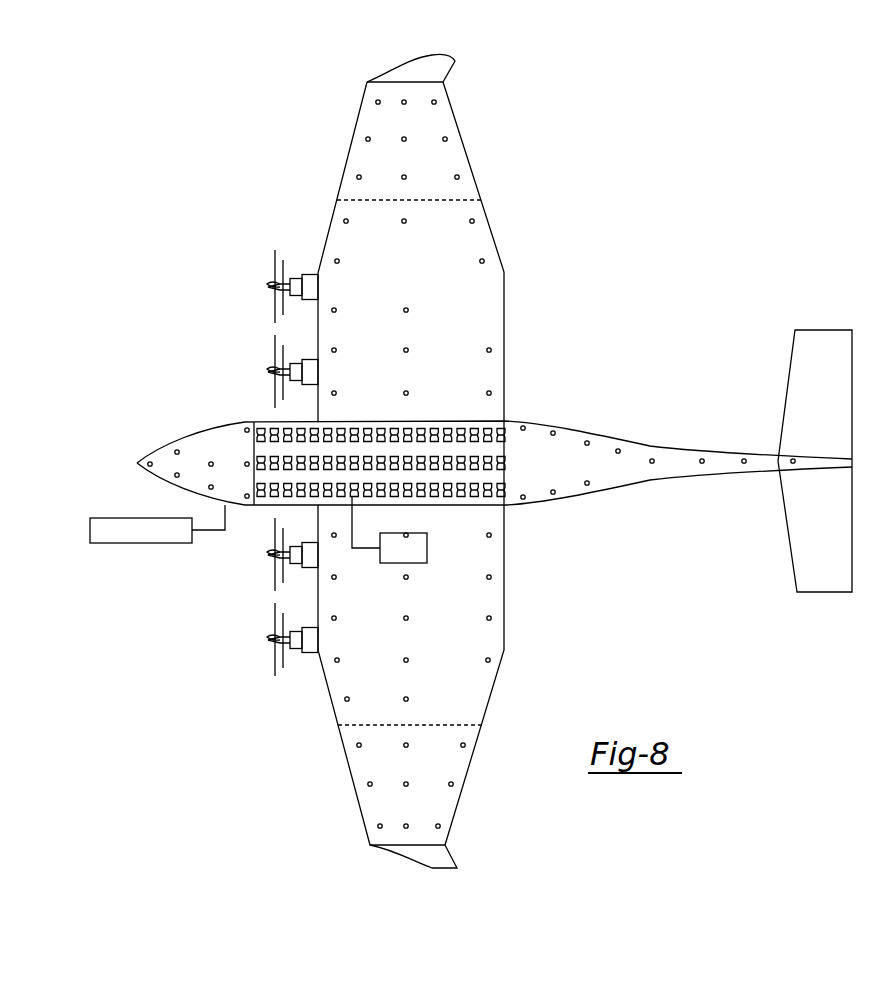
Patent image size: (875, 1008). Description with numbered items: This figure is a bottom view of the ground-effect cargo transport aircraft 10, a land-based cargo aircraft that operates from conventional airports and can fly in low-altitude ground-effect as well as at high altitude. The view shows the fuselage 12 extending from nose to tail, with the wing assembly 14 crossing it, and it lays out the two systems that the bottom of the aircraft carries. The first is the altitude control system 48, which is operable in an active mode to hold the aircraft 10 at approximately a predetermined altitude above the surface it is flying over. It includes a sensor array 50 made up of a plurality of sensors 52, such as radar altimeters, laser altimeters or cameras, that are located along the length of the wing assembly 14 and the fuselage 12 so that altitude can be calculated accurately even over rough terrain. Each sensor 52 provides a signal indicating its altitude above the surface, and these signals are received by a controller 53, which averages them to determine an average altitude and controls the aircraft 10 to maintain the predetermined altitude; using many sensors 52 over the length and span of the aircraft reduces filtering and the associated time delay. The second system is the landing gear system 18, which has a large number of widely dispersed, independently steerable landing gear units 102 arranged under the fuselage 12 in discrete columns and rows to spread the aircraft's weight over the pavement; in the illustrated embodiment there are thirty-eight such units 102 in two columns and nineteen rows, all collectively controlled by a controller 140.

The ground-effect cargo transport aircraft 10 is at (695, 684).
The fuselage 12 is at (558, 408).
The wing assembly 14 is at (522, 639).
The sensor array 50 is at (496, 228).
The landing gear system 18 is at (381, 462).
The landing gear units 102 is at (443, 462).
The sensors 52 is at (404, 261).
The controller 140 is at (397, 563).
The altitude control system 48 is at (80, 531).
The controller 53 is at (130, 543).